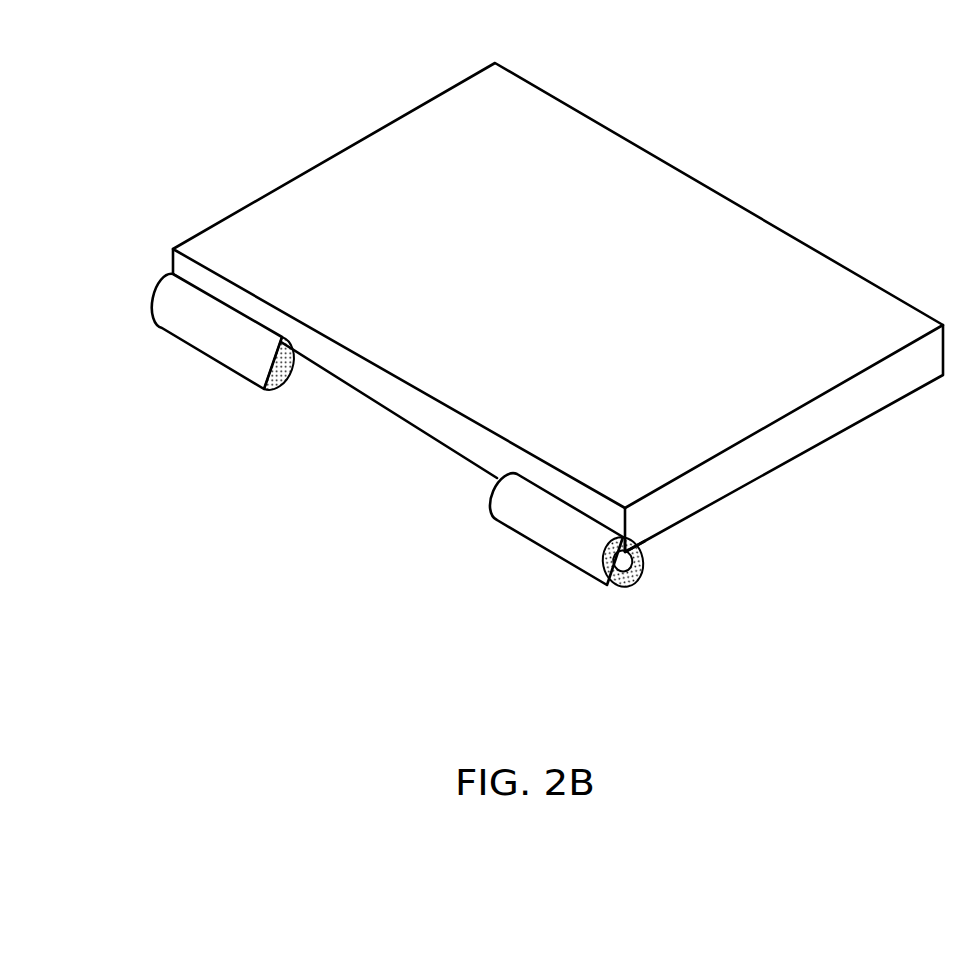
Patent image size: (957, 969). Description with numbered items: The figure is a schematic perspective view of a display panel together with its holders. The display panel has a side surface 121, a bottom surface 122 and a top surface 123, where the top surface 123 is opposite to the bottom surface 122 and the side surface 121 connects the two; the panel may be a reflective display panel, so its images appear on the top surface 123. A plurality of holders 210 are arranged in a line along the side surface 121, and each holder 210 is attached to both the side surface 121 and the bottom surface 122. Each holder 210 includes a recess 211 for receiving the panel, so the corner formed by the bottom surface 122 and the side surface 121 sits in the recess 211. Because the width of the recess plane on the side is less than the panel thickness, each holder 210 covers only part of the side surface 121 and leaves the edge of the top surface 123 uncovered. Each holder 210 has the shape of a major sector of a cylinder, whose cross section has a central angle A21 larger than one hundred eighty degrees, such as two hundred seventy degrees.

The side surface 121 is at (421, 428).
The bottom surface 122 is at (801, 479).
The top surface 123 is at (406, 210).
The holders 210 is at (206, 336).
The recess 211 is at (652, 522).
The central angle A21 is at (623, 586).